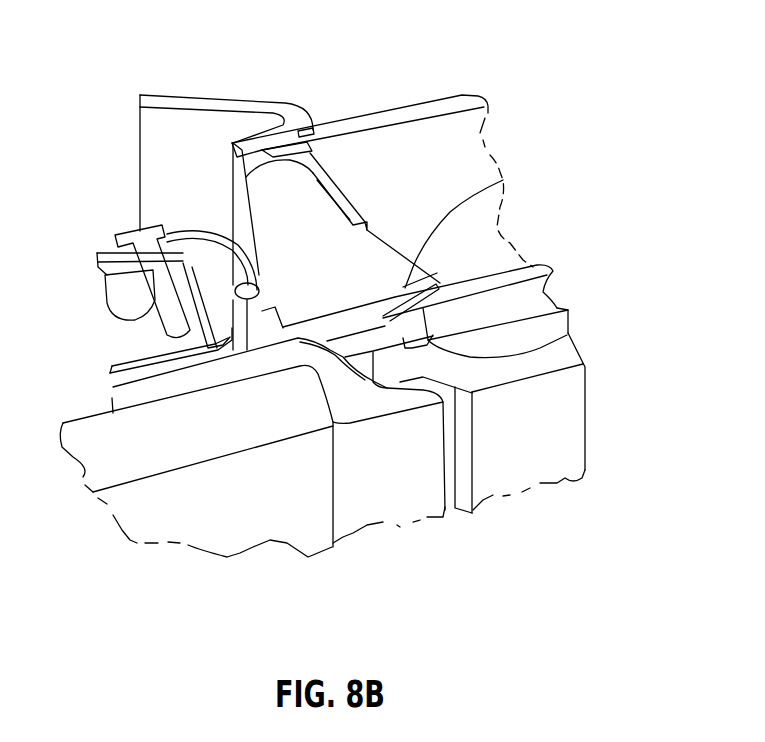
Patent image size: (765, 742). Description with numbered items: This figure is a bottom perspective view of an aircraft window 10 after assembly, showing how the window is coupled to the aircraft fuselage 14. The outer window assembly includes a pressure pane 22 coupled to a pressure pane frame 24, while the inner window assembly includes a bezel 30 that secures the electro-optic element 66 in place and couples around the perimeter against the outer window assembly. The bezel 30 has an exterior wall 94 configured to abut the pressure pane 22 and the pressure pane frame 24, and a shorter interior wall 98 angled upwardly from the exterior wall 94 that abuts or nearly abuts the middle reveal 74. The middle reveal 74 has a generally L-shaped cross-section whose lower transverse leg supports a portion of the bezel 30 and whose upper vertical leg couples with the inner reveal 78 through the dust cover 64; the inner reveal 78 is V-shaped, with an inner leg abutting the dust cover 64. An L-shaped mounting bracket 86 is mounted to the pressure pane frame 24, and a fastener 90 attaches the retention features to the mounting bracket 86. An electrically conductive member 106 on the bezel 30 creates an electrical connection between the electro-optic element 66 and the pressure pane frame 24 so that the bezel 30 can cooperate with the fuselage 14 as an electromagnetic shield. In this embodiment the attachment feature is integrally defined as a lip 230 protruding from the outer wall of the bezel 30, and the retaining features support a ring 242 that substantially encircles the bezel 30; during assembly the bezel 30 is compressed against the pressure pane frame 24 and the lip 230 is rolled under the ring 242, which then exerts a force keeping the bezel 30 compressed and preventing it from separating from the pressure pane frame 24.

The aircraft window 10 is at (603, 148).
The aircraft fuselage 14 is at (193, 513).
The pressure pane 22 is at (530, 455).
The pressure pane frame 24 is at (400, 488).
The bezel 30 is at (260, 217).
The dust cover 64 is at (463, 133).
The electro-optic element 66 is at (533, 292).
The middle reveal 74 is at (333, 178).
The inner reveal 78 is at (213, 138).
The mounting bracket 86 is at (108, 366).
The fastener 90 is at (135, 243).
The exterior wall 94 is at (543, 350).
The interior wall 98 is at (390, 250).
The electrically conductive member 106 is at (503, 181).
The lip 230 is at (250, 331).
The ring 242 is at (103, 262).